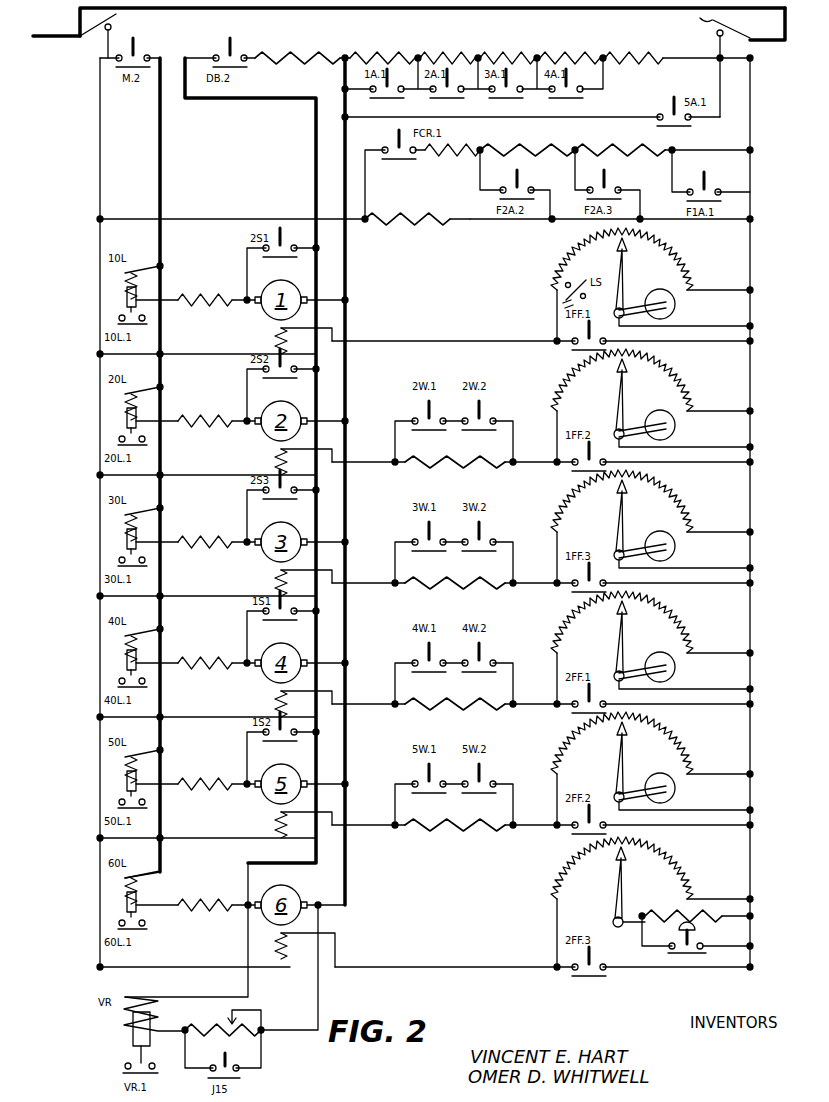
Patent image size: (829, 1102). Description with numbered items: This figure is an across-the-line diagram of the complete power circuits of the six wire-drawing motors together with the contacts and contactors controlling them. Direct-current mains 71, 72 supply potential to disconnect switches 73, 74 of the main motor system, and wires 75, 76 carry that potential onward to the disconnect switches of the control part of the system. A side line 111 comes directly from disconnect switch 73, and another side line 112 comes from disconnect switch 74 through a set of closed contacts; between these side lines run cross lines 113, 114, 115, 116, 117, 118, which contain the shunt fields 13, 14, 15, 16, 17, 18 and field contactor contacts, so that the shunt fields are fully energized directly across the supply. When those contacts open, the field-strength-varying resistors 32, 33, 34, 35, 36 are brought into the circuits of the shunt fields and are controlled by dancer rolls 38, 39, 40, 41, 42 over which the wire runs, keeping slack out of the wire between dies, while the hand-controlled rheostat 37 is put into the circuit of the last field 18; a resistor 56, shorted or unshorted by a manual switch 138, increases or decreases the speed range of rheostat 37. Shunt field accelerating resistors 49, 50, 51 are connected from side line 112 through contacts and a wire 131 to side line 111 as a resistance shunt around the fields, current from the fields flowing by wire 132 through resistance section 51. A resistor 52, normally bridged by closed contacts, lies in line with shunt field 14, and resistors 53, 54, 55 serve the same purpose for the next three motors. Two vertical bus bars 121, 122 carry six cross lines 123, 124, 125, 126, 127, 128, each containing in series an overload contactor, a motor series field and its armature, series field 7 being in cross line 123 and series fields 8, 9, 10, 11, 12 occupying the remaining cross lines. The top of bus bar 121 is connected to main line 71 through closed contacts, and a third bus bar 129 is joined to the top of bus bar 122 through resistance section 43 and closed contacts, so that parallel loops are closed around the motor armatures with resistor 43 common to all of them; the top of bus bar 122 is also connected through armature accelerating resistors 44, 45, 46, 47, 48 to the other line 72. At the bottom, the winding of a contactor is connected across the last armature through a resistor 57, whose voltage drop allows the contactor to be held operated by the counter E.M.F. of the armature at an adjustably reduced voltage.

The series field 7 is at (205, 282).
The series field 8 is at (205, 403).
The series field 9 is at (205, 524).
The series field 10 is at (205, 645).
The series field 11 is at (205, 766).
The series field 12 is at (205, 887).
The shunt field 13 is at (290, 347).
The shunt field 14 is at (290, 468).
The shunt field 15 is at (290, 589).
The shunt field 16 is at (290, 710).
The shunt field 17 is at (290, 831).
The shunt field 18 is at (305, 950).
The field-strength-varying resistor 32 is at (613, 259).
The field-strength-varying resistor 33 is at (611, 380).
The field-strength-varying resistor 34 is at (611, 501).
The field-strength-varying resistor 35 is at (614, 622).
The field-strength-varying resistor 36 is at (614, 743).
The field-strength-varying resistor 37 is at (613, 868).
The dancer roll 38 is at (644, 278).
The dancer roll 39 is at (658, 401).
The dancer roll 40 is at (658, 522).
The dancer roll 41 is at (658, 643).
The dancer roll 42 is at (658, 764).
The resistance section 43 is at (297, 49).
The armature accelerating resistor 44 is at (382, 49).
The armature accelerating resistor 45 is at (447, 49).
The armature accelerating resistor 46 is at (507, 49).
The armature accelerating resistor 47 is at (570, 49).
The armature accelerating resistor 48 is at (634, 49).
The shunt field accelerating resistor 49 is at (454, 141).
The shunt field accelerating resistor 50 is at (527, 141).
The shunt field accelerating resistor 51 is at (620, 141).
The resistor 52 is at (455, 453).
The resistor 53 is at (455, 574).
The resistor 54 is at (455, 695).
The resistor 55 is at (455, 816).
The resistor 56 is at (670, 907).
The resistor 57 is at (223, 1021).
The main 71 is at (52, 32).
The main 72 is at (749, 68).
The disconnect switch 73 is at (110, 32).
The disconnect switch 74 is at (697, 24).
The wire 75 is at (432, 21).
The wire 76 is at (767, 24).
The side line 111 is at (100, 197).
The side line 112 is at (768, 512).
The cross line 113 is at (175, 353).
The cross line 114 is at (175, 474).
The cross line 115 is at (175, 595).
The cross line 116 is at (175, 716).
The cross line 117 is at (175, 837).
The cross line 118 is at (175, 966).
The vertical bus bar 121 is at (179, 465).
The vertical bus bar 122 is at (365, 481).
The cross line 123 is at (345, 300).
The cross line 124 is at (345, 421).
The cross line 125 is at (345, 542).
The cross line 126 is at (345, 663).
The cross line 127 is at (345, 784).
The cross line 128 is at (345, 905).
The vertical bus bar 129 is at (250, 460).
The wire 131 is at (207, 217).
The wire 132 is at (672, 226).
The manual switch 138 is at (703, 937).